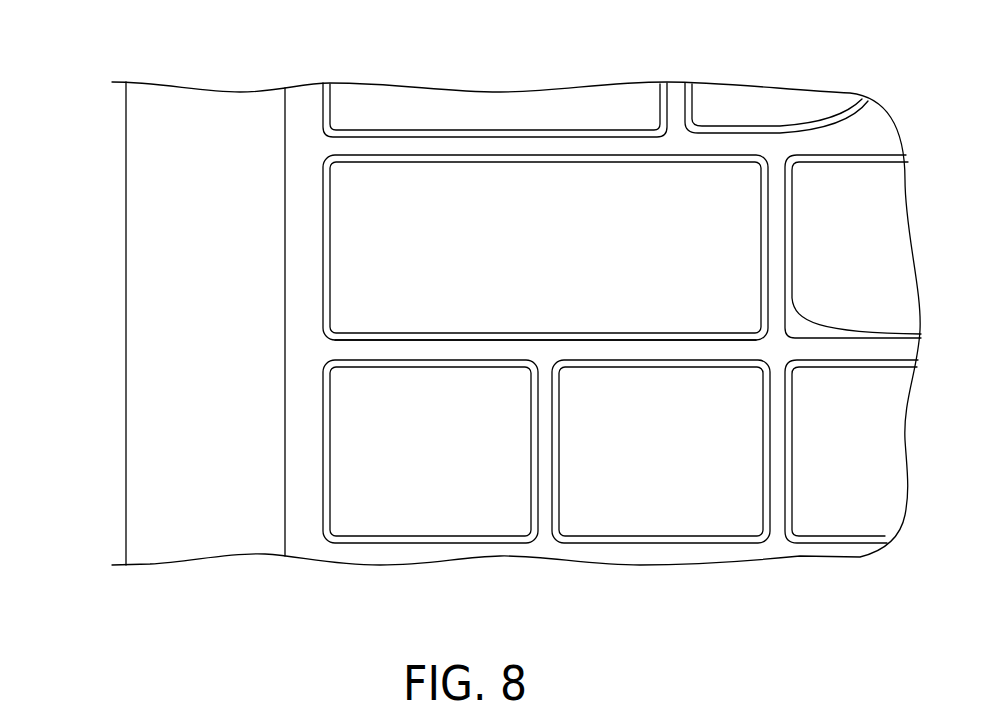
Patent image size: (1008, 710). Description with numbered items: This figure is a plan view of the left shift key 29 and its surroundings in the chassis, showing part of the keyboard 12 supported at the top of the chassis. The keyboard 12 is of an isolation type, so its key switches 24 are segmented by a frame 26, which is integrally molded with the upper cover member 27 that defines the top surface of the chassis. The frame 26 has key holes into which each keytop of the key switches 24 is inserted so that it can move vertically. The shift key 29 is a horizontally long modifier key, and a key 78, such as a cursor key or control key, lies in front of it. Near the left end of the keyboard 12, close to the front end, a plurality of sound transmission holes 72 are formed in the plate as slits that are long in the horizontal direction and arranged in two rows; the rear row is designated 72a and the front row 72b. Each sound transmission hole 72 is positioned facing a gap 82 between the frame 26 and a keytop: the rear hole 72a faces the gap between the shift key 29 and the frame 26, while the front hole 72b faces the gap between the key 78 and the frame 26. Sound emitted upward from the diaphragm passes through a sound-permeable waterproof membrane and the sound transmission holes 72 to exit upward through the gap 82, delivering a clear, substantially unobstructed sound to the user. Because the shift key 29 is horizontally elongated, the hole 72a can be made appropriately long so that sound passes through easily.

The keyboard 12 is at (830, 62).
The key switch 24 is at (425, 193).
The frame 26 is at (731, 350).
The upper cover member 27 is at (155, 512).
The shift key 29 is at (553, 193).
The sound transmission hole 72 is at (53, 290).
The rear row sound transmission hole 72a is at (612, 334).
The front row sound transmission hole 72b is at (613, 366).
The key 78 is at (607, 490).
The gap 82 is at (673, 333).